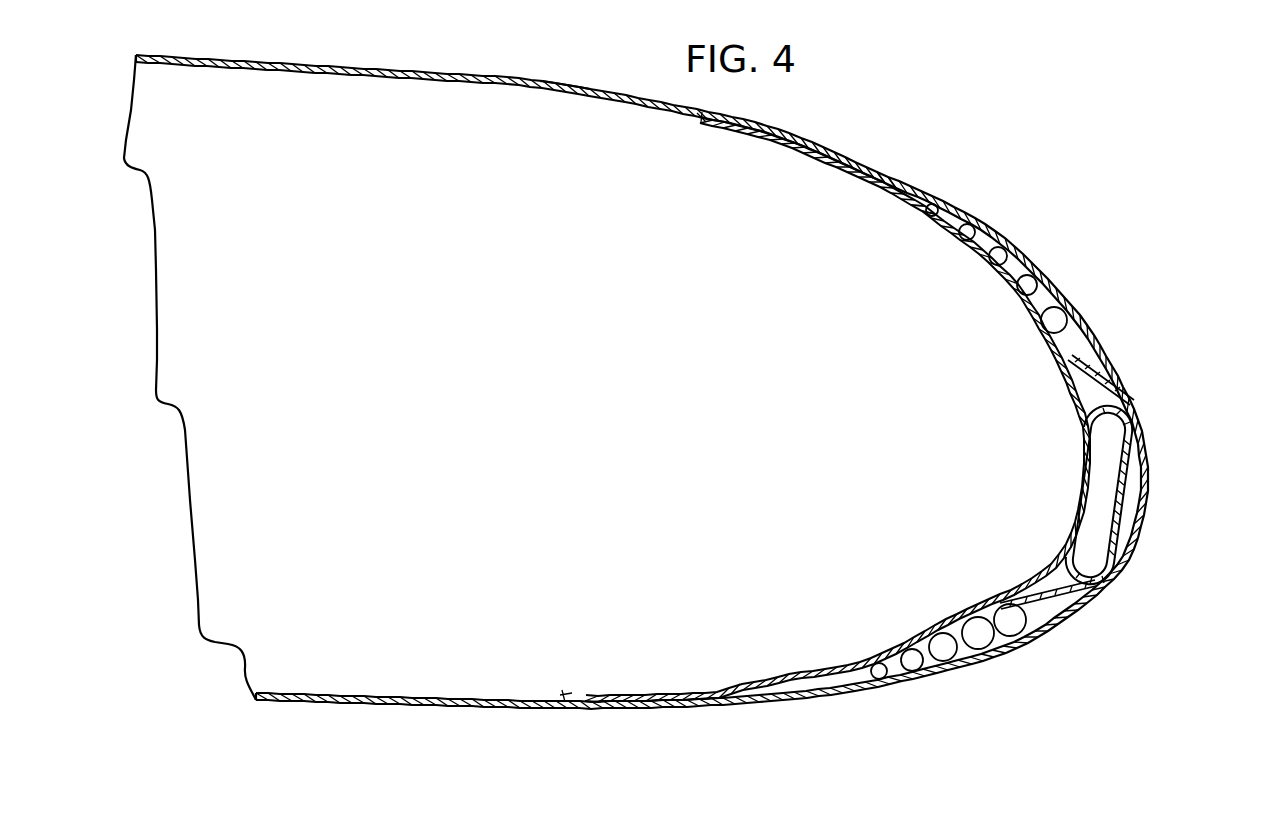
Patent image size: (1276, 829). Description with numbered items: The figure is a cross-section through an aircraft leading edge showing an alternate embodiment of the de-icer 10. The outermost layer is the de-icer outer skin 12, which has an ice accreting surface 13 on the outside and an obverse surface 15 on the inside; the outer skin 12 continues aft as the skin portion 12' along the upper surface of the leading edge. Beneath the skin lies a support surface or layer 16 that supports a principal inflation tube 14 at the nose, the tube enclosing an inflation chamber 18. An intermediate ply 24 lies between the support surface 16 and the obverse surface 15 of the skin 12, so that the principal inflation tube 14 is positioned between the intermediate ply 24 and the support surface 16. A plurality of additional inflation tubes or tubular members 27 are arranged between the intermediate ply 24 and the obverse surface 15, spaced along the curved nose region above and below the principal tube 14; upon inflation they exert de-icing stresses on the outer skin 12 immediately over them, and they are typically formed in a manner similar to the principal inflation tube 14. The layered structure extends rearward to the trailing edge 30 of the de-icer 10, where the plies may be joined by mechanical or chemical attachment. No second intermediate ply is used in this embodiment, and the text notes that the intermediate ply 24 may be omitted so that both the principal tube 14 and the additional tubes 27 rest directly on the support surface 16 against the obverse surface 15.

The de-icer 10 is at (1200, 367).
The outer skin 12 is at (642, 382).
The outer skin aft extension 12' is at (574, 61).
The ice accreting surface 13 is at (1002, 242).
The principal inflation tube 14 is at (1100, 557).
The obverse surface 15 is at (924, 208).
The support surface 16 is at (888, 203).
The inflation chamber 18 is at (1107, 500).
The intermediate ply 24 is at (1137, 450).
The additional inflation tubes 27 is at (1050, 283).
The trailing edge 30 is at (808, 142).